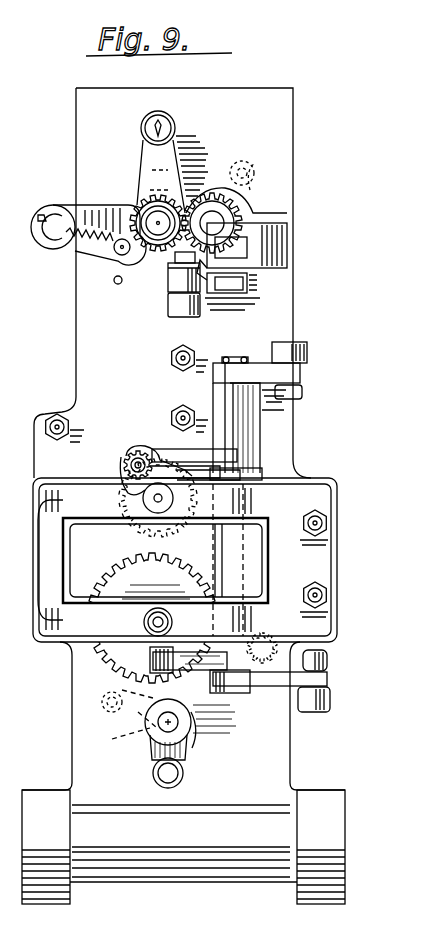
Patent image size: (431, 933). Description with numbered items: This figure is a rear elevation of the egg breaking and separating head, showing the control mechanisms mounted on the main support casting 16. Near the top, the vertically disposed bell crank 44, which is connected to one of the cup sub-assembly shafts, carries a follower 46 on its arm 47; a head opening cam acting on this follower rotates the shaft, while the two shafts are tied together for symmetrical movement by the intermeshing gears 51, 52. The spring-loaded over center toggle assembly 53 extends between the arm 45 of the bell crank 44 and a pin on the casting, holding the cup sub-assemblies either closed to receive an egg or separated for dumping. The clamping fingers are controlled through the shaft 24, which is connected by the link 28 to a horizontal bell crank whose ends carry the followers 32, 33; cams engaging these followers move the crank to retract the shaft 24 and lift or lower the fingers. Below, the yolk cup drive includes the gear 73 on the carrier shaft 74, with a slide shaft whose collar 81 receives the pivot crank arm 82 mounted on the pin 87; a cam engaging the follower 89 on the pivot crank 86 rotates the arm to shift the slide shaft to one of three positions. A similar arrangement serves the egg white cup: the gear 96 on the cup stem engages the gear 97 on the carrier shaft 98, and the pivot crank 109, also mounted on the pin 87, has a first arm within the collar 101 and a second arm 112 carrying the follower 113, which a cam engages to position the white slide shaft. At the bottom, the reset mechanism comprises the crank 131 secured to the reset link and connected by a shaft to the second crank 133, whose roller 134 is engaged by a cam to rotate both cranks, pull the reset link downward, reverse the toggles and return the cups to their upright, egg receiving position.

The main support casting 16 is at (112, 384).
The shaft 24 is at (176, 276).
The link 28 is at (168, 292).
The follower 32 is at (250, 248).
The follower 33 is at (172, 318).
The bell crank 44 is at (131, 162).
The arm 45 is at (127, 258).
The follower 46 is at (176, 127).
The arm 47 is at (187, 160).
The gear 51 is at (150, 205).
The gear 52 is at (233, 213).
The spring-loaded over center toggle assembly 53 is at (72, 247).
The gear 73 is at (124, 463).
The carrier shaft 74 is at (149, 505).
The collar 81 is at (122, 470).
The pivot crank arm 82 is at (178, 452).
The pivot crank 86 is at (215, 393).
The pin 87 is at (234, 360).
The follower 89 is at (277, 342).
The gear 96 is at (266, 652).
The gear 97 is at (118, 571).
The carrier shaft 98 is at (173, 622).
The collar 101 is at (188, 665).
The pivot crank 109 is at (211, 553).
The second arm 112 is at (278, 683).
The follower 113 is at (309, 702).
The crank 131 is at (121, 726).
The second crank 133 is at (184, 778).
The roller 134 is at (154, 783).